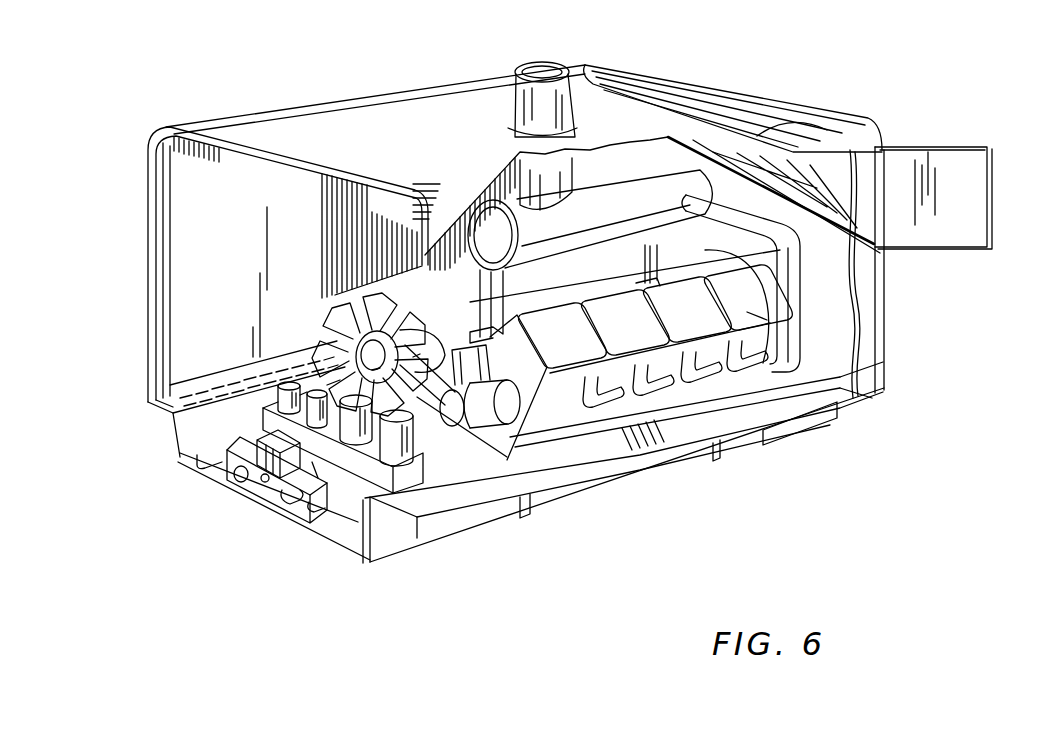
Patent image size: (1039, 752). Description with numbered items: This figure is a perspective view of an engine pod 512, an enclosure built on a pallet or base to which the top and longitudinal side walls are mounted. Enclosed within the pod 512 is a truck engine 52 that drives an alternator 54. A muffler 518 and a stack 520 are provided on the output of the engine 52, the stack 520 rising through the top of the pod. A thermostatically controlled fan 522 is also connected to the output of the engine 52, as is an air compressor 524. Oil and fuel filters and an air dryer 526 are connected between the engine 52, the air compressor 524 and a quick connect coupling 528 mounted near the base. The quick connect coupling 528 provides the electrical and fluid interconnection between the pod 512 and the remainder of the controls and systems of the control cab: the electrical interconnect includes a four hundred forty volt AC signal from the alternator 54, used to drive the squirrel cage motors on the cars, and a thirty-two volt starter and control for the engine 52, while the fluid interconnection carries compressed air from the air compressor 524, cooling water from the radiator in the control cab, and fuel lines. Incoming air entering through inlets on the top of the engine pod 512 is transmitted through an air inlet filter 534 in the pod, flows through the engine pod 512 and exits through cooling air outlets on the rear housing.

The engine pod 512 is at (352, 63).
The stack 520 is at (523, 99).
The muffler 518 is at (620, 193).
The air inlet filter 534 is at (833, 207).
The alternator 54 is at (705, 254).
The truck engine 52 is at (765, 320).
The air compressor 524 is at (505, 415).
The thermostatically controlled fan 522 is at (420, 388).
The oil and fuel filters and air dryer 526 is at (424, 441).
The quick connect coupling 528 is at (262, 487).